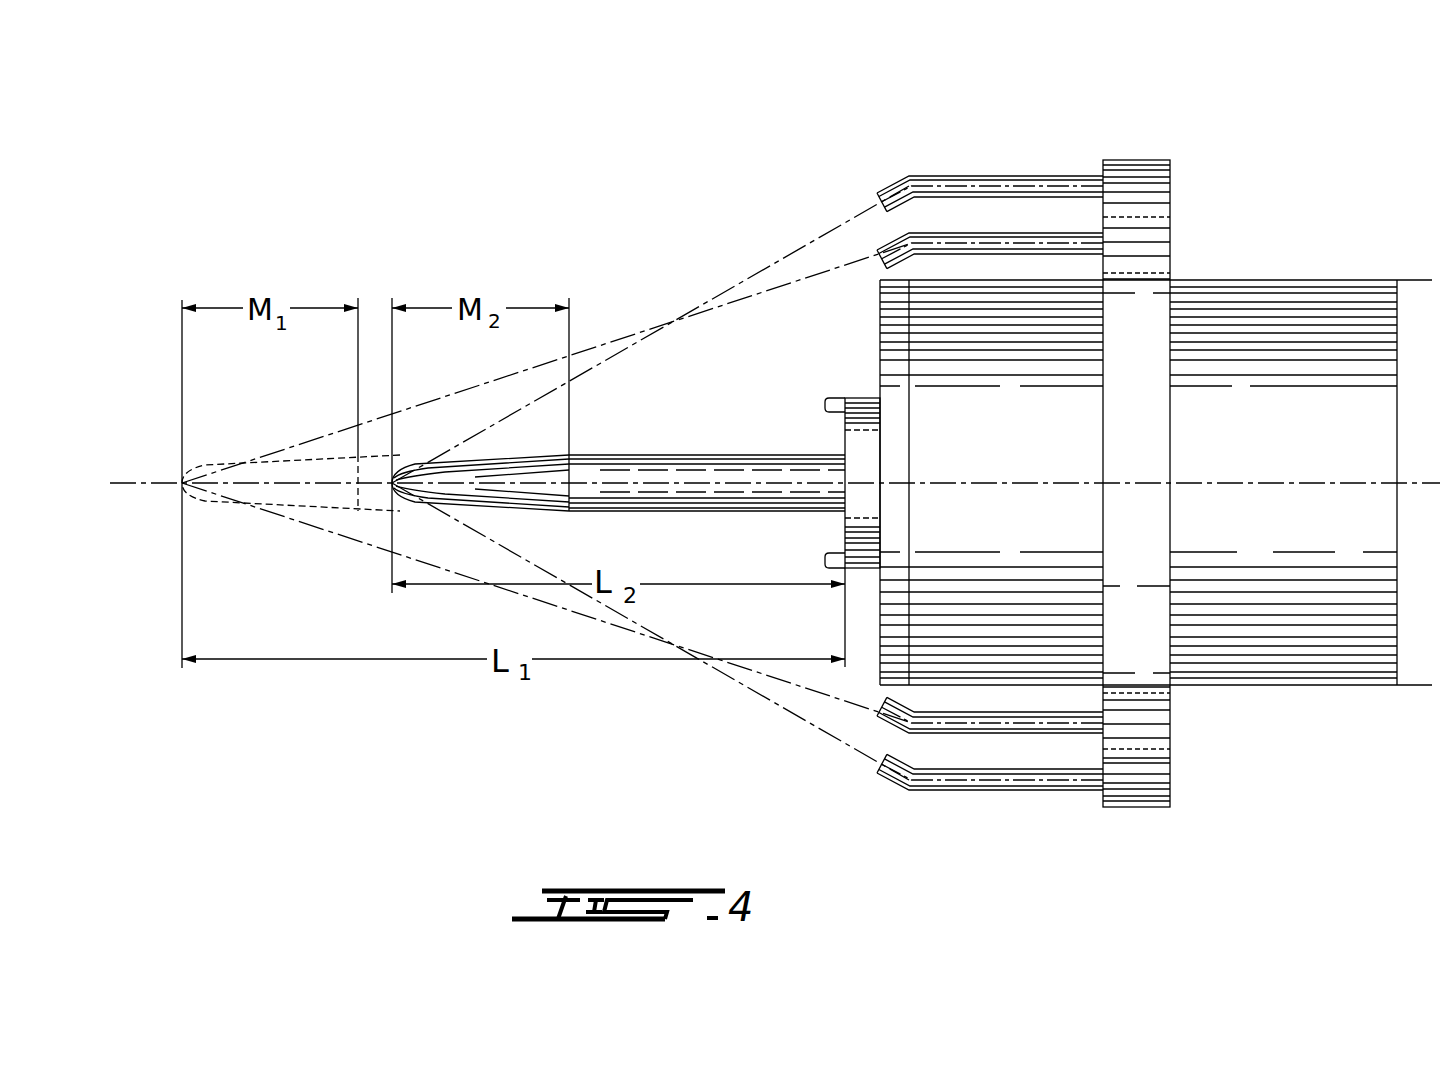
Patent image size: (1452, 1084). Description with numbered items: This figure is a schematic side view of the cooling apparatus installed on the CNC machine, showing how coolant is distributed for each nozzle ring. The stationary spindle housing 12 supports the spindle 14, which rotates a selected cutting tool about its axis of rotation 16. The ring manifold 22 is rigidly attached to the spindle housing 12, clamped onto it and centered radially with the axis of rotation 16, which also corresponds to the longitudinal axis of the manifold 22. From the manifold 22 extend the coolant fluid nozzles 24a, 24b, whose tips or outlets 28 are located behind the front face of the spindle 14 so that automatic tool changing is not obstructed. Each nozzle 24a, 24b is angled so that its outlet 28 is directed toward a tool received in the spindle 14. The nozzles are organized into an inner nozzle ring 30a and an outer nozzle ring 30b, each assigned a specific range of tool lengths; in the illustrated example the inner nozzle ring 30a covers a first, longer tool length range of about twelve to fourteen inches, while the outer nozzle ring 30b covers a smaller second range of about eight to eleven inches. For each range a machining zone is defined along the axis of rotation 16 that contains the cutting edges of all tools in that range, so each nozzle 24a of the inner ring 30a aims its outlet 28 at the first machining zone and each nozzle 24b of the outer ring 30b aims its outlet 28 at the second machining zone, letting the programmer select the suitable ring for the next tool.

The spindle housing 12 is at (1283, 305).
The spindle 14 is at (858, 413).
The axis of rotation 16 is at (137, 483).
The ring manifold 22 is at (1158, 158).
The coolant fluid nozzle 24a is at (933, 728).
The coolant fluid nozzle 24b is at (995, 784).
The outlet 28 is at (878, 204).
The inner nozzle ring 30a is at (1147, 728).
The outer nozzle ring 30b is at (1155, 786).